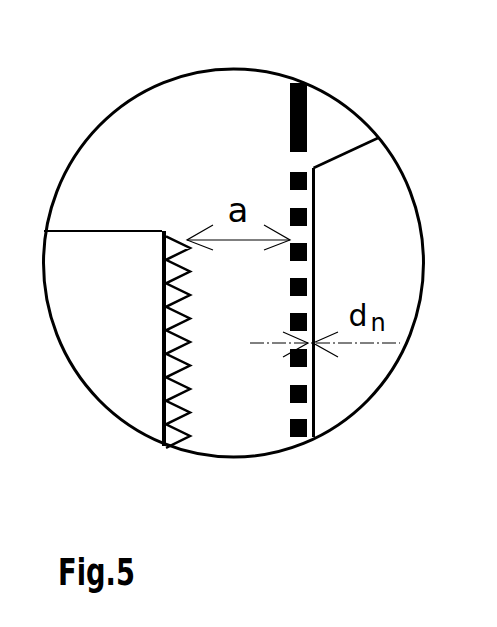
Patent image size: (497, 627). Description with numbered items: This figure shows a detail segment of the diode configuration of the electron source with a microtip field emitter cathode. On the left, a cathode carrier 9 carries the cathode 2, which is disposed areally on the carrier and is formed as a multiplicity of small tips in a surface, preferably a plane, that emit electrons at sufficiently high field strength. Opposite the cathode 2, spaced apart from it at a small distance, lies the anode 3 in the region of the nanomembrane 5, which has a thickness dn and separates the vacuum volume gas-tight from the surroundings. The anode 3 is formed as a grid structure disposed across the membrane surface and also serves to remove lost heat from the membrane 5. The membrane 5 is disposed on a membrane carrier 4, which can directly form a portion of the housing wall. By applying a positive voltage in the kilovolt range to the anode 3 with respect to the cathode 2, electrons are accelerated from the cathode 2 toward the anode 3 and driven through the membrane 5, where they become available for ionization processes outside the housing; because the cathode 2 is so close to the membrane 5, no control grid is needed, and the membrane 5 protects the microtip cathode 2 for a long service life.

The cathode 2 is at (183, 322).
The anode 3 is at (292, 185).
The membrane carrier 4 is at (324, 144).
The nanomembrane 5 is at (312, 287).
The cathode carrier 9 is at (89, 257).